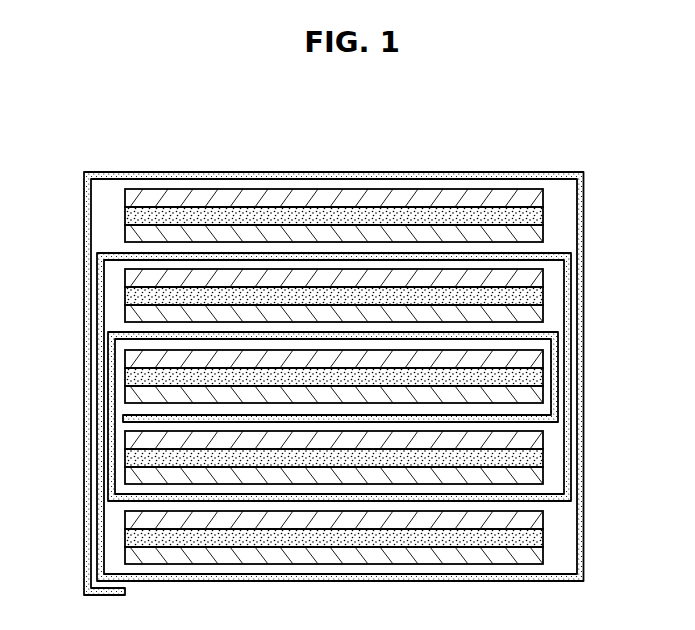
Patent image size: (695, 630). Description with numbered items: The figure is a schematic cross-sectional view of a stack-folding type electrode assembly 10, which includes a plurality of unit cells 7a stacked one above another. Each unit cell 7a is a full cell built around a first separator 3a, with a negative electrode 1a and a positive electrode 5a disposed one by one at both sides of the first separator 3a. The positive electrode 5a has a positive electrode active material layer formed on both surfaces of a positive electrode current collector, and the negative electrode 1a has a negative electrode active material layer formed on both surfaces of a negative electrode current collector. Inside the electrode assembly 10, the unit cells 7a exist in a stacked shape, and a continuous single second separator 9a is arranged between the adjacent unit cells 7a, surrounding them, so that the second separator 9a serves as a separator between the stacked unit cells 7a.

The negative electrode 1a is at (537, 198).
The first separator 3a is at (537, 215).
The positive electrode 5a is at (537, 233).
The unit cell 7a is at (396, 378).
The second separator 9a is at (84, 312).
The electrode assembly 10 is at (612, 146).